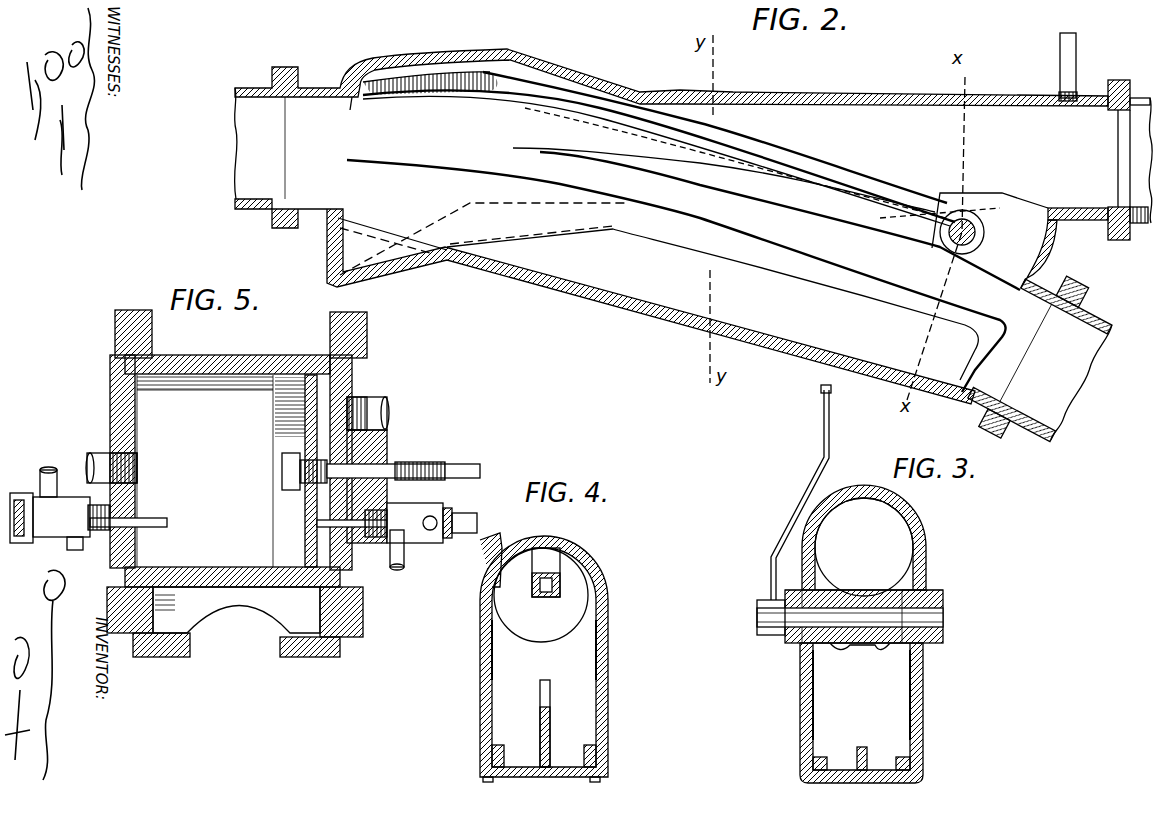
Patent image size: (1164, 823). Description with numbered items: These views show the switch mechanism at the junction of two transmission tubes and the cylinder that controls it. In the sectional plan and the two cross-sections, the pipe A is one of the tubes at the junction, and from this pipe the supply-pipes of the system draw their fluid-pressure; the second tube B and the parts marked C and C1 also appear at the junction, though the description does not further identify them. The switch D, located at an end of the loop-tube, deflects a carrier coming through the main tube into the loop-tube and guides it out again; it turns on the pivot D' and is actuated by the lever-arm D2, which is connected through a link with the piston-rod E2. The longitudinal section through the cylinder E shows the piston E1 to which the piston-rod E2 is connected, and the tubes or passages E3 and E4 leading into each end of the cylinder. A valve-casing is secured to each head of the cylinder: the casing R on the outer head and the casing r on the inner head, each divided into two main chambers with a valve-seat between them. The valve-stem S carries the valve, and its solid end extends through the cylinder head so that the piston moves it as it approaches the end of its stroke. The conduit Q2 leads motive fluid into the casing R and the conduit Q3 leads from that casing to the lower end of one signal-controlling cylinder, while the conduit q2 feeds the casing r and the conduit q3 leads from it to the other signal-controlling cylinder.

In FIG. 2, the pipe A is at (693, 218).
In FIG. 4, the pipe A is at (544, 657).
In FIG. 3, the pipe A is at (864, 540).
In FIG. 2, the branch pipe B is at (1039, 360).
In FIG. 3, the branch pipe B is at (861, 713).
In FIG. 2, the guide passage (divider) C is at (679, 270).
In FIG. 3, the guide passage (divider) C is at (861, 695).
In FIG. 4, the central rib C1 is at (553, 709).
In FIG. 2, the switch D is at (659, 149).
In FIG. 4, the switch D is at (546, 572).
In FIG. 3, the switch D is at (864, 662).
In FIG. 2, the pivot D' is at (984, 209).
In FIG. 3, the pivot D' is at (850, 604).
In FIG. 3, the lever-arm D2 is at (800, 492).
In FIG. 5, the cylinder E is at (237, 483).
In FIG. 5, the piston E1 is at (296, 471).
In FIG. 5, the piston-rod E2 is at (445, 478).
In FIG. 5, the tube or passage E3 is at (105, 455).
In FIG. 5, the tube or passage E4 is at (385, 415).
In FIG. 5, the conduit Q2 is at (37, 474).
In FIG. 5, the conduit Q3 is at (80, 558).
In FIG. 5, the valve-casing R is at (404, 514).
In FIG. 5, the valve-casing r is at (60, 518).
In FIG. 5, the valve-stem S is at (238, 511).
In FIG. 5, the conduit q2 is at (460, 515).
In FIG. 5, the conduit q3 is at (412, 550).